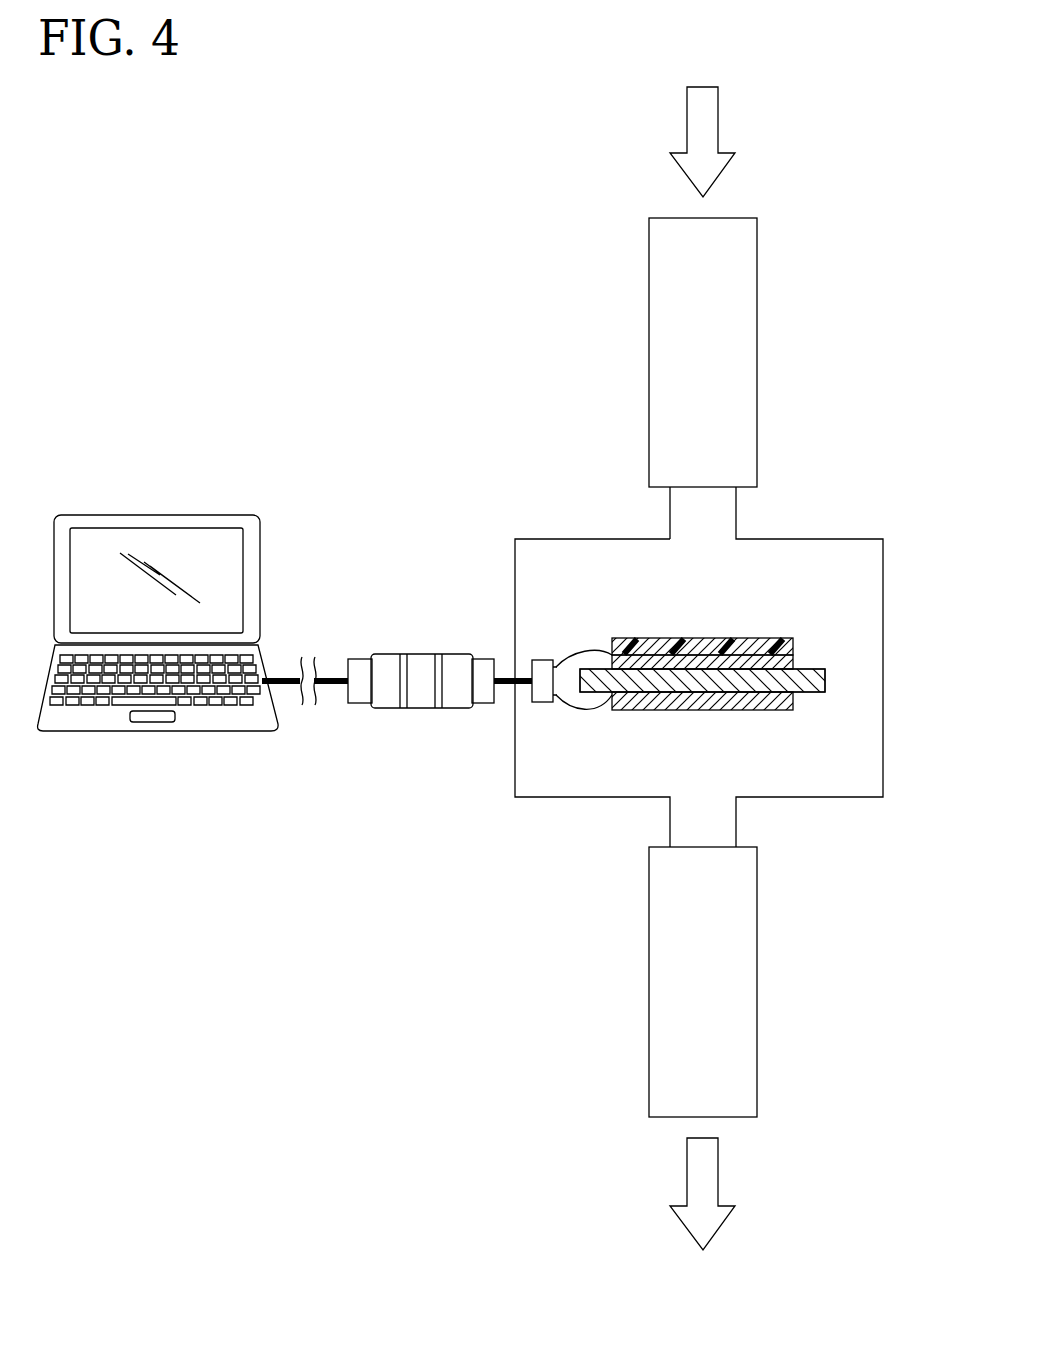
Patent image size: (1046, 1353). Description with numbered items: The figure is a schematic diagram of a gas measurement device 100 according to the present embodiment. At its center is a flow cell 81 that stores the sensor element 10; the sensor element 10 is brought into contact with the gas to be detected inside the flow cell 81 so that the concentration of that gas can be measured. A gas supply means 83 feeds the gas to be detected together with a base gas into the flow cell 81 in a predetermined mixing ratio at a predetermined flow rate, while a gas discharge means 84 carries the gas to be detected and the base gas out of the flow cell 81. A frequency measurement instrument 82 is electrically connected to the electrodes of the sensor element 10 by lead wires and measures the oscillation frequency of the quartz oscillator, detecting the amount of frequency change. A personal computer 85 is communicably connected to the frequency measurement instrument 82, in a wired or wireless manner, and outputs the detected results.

The gas measurement device 100 is at (246, 230).
The personal computer 85 is at (152, 517).
The frequency measurement instrument 82 is at (423, 654).
The flow cell 81 is at (815, 539).
The gas supply means 83 is at (649, 340).
The gas discharge means 84 is at (649, 980).
The sensor element 10 is at (753, 612).